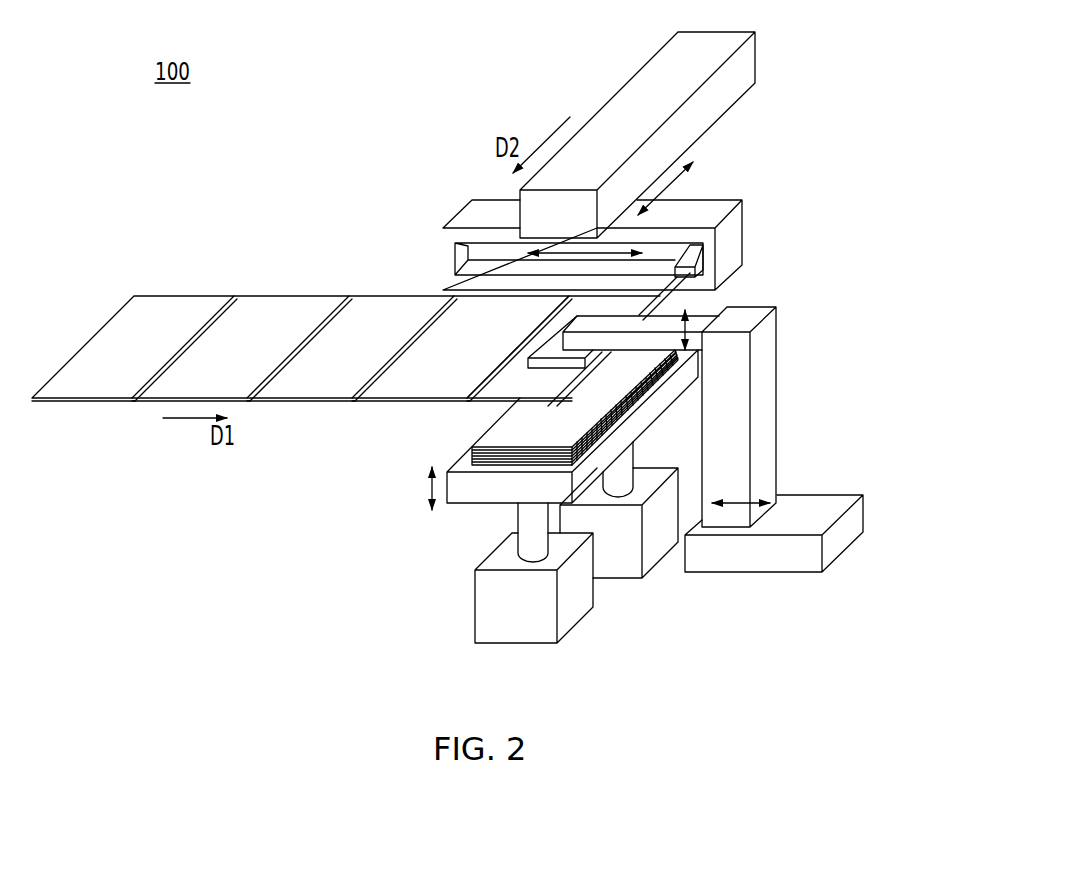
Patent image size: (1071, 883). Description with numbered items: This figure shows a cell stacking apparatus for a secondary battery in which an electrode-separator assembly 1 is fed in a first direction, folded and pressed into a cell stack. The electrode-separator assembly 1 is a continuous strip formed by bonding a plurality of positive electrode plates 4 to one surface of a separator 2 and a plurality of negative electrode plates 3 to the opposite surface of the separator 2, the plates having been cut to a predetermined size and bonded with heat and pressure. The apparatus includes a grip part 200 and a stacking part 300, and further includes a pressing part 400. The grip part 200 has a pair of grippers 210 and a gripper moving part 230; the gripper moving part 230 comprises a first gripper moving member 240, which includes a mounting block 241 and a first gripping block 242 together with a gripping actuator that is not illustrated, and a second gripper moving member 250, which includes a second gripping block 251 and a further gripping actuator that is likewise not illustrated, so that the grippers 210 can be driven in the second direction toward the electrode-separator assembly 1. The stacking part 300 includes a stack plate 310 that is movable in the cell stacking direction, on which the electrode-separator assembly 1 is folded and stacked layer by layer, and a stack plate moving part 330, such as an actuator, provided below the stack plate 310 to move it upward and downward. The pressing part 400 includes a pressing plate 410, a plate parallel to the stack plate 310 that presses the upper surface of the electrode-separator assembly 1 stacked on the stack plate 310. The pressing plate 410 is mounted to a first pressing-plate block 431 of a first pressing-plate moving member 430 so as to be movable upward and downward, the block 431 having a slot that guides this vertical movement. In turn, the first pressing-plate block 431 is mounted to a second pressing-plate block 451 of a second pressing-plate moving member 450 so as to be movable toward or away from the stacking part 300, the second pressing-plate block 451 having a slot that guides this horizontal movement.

The electrode-separator assembly 1 is at (425, 453).
The separator 2 is at (427, 390).
The negative electrode plate 3 is at (315, 387).
The positive electrode plate 4 is at (375, 398).
The grip part 200 is at (832, 272).
The gripper 210 is at (697, 271).
The gripper moving part 230 is at (895, 112).
The first gripper moving member 240 is at (822, 183).
The mounting block 241 is at (712, 266).
The first gripping block 242 is at (703, 205).
The second gripper moving member 250 is at (818, 117).
The second gripping block 251 is at (728, 90).
The stacking part 300 is at (398, 627).
The stack plate 310 is at (470, 492).
The stack plate moving part 330 is at (483, 618).
The pressing part 400 is at (870, 353).
The pressing plate 410 is at (555, 350).
The first pressing-plate moving member 430 is at (875, 402).
The first pressing-plate block 431 is at (737, 421).
The second pressing-plate moving member 450 is at (885, 438).
The second pressing-plate block 451 is at (825, 503).